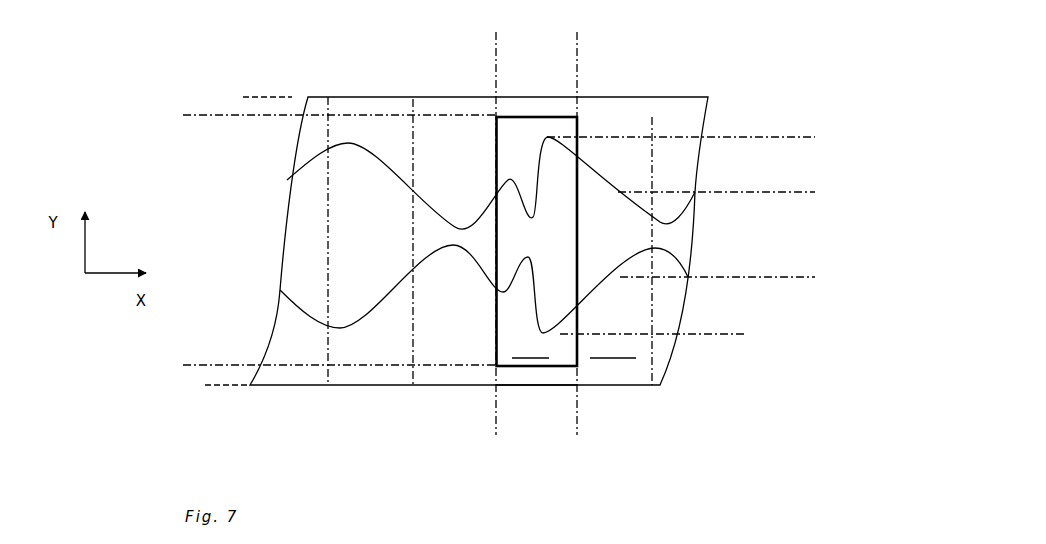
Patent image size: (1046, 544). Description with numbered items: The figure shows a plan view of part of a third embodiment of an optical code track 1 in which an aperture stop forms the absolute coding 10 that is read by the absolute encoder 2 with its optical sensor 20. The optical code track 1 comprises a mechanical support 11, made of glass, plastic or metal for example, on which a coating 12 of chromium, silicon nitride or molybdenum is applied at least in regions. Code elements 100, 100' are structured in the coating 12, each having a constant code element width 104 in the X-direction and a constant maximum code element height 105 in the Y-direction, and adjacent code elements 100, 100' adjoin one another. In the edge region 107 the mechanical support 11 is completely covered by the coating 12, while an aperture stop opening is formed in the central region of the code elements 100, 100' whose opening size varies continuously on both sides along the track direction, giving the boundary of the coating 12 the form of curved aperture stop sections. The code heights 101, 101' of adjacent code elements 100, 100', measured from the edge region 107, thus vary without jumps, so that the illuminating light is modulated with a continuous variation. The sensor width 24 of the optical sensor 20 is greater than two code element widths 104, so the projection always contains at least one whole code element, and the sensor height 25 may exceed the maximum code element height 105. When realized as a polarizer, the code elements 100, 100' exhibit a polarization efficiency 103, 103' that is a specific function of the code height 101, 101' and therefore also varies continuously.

The optical code track 1 is at (519, 228).
The absolute encoder 2 is at (483, 247).
The optical sensor 20 is at (483, 247).
The absolute coding 10 is at (348, 143).
The mechanical support 11 is at (295, 385).
The coating 12 is at (479, 247).
The sensor width 24 is at (608, 425).
The sensor height 25 is at (331, 240).
The maximum code element height 105 is at (204, 117).
The code element 100 is at (452, 223).
The adjacent code element 100' is at (618, 211).
The code height 101 is at (681, 235).
The code height of adjacent code element 101' is at (717, 234).
The polarization efficiency 103 is at (530, 350).
The polarization efficiency of adjacent code element 103' is at (613, 350).
The code element width 104 is at (465, 46).
The edge region 107 is at (267, 137).